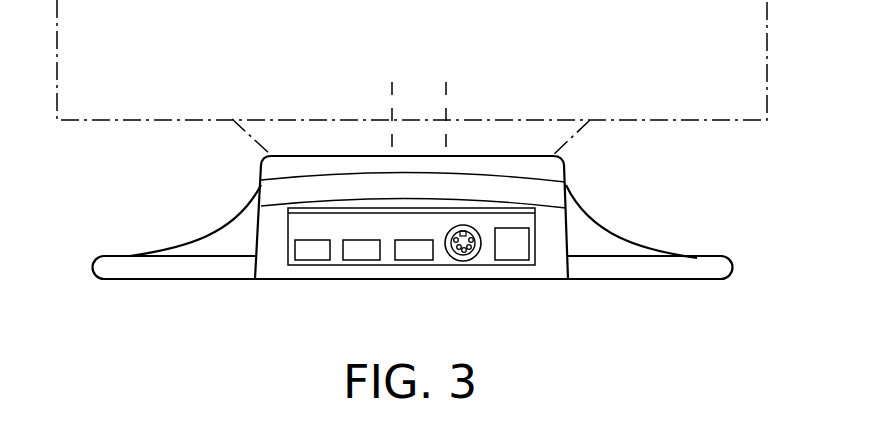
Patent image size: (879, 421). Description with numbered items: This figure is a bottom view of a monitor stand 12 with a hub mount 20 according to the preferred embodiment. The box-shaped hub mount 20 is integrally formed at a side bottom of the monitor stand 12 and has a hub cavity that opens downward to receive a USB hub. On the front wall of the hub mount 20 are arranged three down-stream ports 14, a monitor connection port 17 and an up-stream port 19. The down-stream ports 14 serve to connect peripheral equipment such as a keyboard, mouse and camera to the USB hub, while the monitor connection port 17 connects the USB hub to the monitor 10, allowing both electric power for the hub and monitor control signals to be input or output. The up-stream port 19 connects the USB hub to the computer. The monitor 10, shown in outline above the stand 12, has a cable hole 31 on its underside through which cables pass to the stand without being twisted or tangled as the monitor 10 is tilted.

The monitor 10 is at (128, 108).
The monitor stand 12 is at (620, 240).
The down-stream ports 14 is at (312, 260).
The monitor connection port 17 is at (463, 261).
The up-stream port 19 is at (512, 260).
The hub mount 20 is at (276, 266).
The cable hole 31 is at (466, 85).